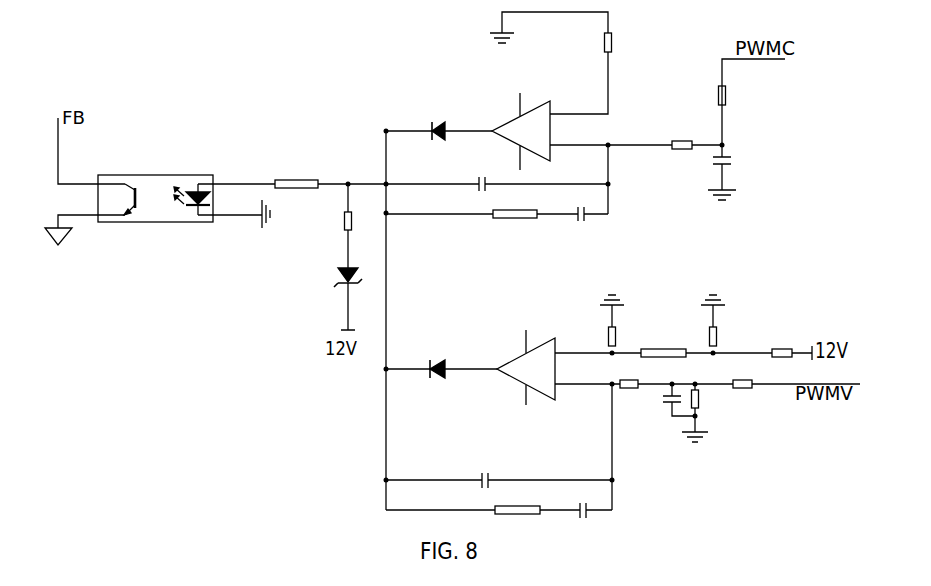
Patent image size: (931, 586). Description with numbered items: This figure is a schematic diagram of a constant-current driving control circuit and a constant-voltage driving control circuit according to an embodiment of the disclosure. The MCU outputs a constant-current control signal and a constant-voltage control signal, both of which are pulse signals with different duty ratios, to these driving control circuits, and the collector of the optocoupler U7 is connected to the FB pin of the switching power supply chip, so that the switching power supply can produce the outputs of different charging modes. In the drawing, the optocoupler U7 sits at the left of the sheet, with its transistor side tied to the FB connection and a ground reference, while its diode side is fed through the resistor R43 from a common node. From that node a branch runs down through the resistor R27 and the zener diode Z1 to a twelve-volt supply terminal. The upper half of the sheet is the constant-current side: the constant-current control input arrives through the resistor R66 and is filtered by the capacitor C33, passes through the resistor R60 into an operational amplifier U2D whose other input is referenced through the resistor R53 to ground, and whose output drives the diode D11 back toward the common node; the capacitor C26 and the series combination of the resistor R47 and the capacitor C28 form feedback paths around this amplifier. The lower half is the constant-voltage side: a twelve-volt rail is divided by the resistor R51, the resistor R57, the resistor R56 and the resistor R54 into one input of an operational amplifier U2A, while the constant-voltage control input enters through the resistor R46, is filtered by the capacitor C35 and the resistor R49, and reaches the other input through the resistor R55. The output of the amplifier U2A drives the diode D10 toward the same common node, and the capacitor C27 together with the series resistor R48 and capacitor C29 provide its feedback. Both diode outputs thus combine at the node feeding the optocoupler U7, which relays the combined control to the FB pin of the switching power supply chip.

The optocoupler U7 is at (155, 188).
The resistor R43 is at (295, 171).
The resistor R27 is at (335, 209).
The zener diode Z1 is at (334, 280).
The diode D11 is at (443, 118).
The operational amplifier U2D is at (539, 122).
The resistor R53 is at (624, 41).
The resistor R60 is at (680, 134).
The resistor R66 is at (738, 95).
The capacitor C33 is at (732, 172).
The capacitor C26 is at (497, 171).
The resistor R47 is at (515, 227).
The capacitor C28 is at (590, 202).
The diode D10 is at (431, 359).
The operational amplifier U2A is at (537, 360).
The resistor R54 is at (621, 320).
The resistor R56 is at (663, 344).
The resistor R57 is at (724, 320).
The resistor R51 is at (781, 343).
The resistor R55 is at (627, 373).
The resistor R46 is at (744, 373).
The capacitor C35 is at (665, 400).
The resistor R49 is at (705, 413).
The capacitor C27 is at (499, 469).
The resistor R48 is at (517, 498).
The capacitor C29 is at (592, 499).